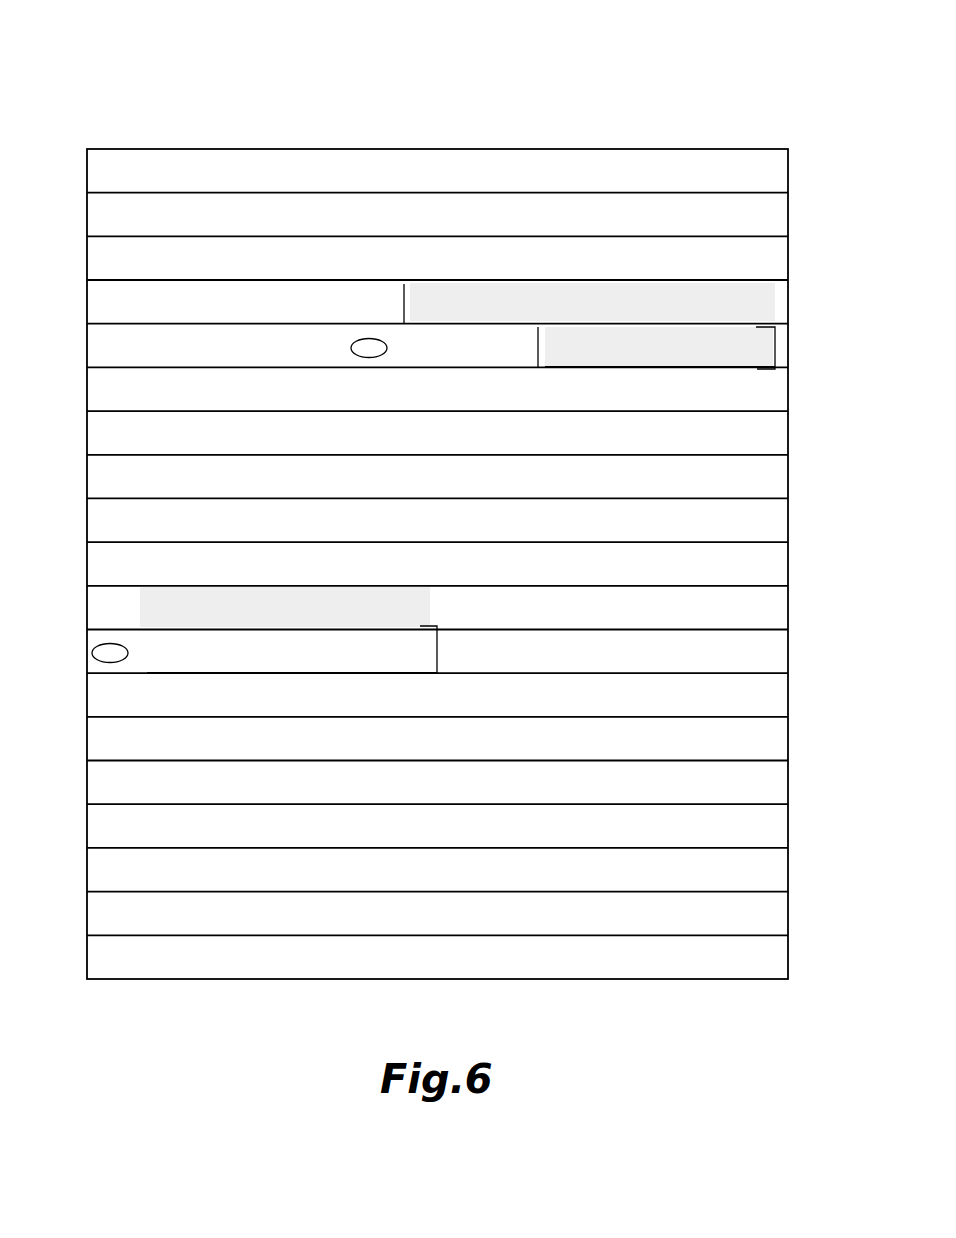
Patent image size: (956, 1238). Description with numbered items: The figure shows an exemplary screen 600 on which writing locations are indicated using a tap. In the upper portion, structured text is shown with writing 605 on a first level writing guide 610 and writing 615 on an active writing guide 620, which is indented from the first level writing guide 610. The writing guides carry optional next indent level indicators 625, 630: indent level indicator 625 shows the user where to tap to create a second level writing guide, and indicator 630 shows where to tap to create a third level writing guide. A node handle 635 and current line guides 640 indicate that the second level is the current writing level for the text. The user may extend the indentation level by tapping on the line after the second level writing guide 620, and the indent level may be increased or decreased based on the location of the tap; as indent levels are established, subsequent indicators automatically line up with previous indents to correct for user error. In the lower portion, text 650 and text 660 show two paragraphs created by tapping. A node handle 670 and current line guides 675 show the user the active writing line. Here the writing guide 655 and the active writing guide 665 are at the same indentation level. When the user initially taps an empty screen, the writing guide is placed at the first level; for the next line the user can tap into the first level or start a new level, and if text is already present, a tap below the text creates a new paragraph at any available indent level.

The exemplary screen 600 is at (822, 73).
The writing 605 is at (396, 281).
The first level writing guide 610 is at (566, 282).
The writing 615 is at (432, 366).
The active writing guide 620 is at (637, 367).
The indent level indicator 625 is at (405, 308).
The indent level indicator 630 is at (540, 347).
The node handle 635 is at (351, 348).
The current line guides 640 is at (778, 340).
The text 650 is at (176, 590).
The writing guide 655 is at (308, 590).
The text 660 is at (175, 668).
The active writing guide 665 is at (362, 668).
The node handle 670 is at (92, 655).
The current line guides 675 is at (439, 655).